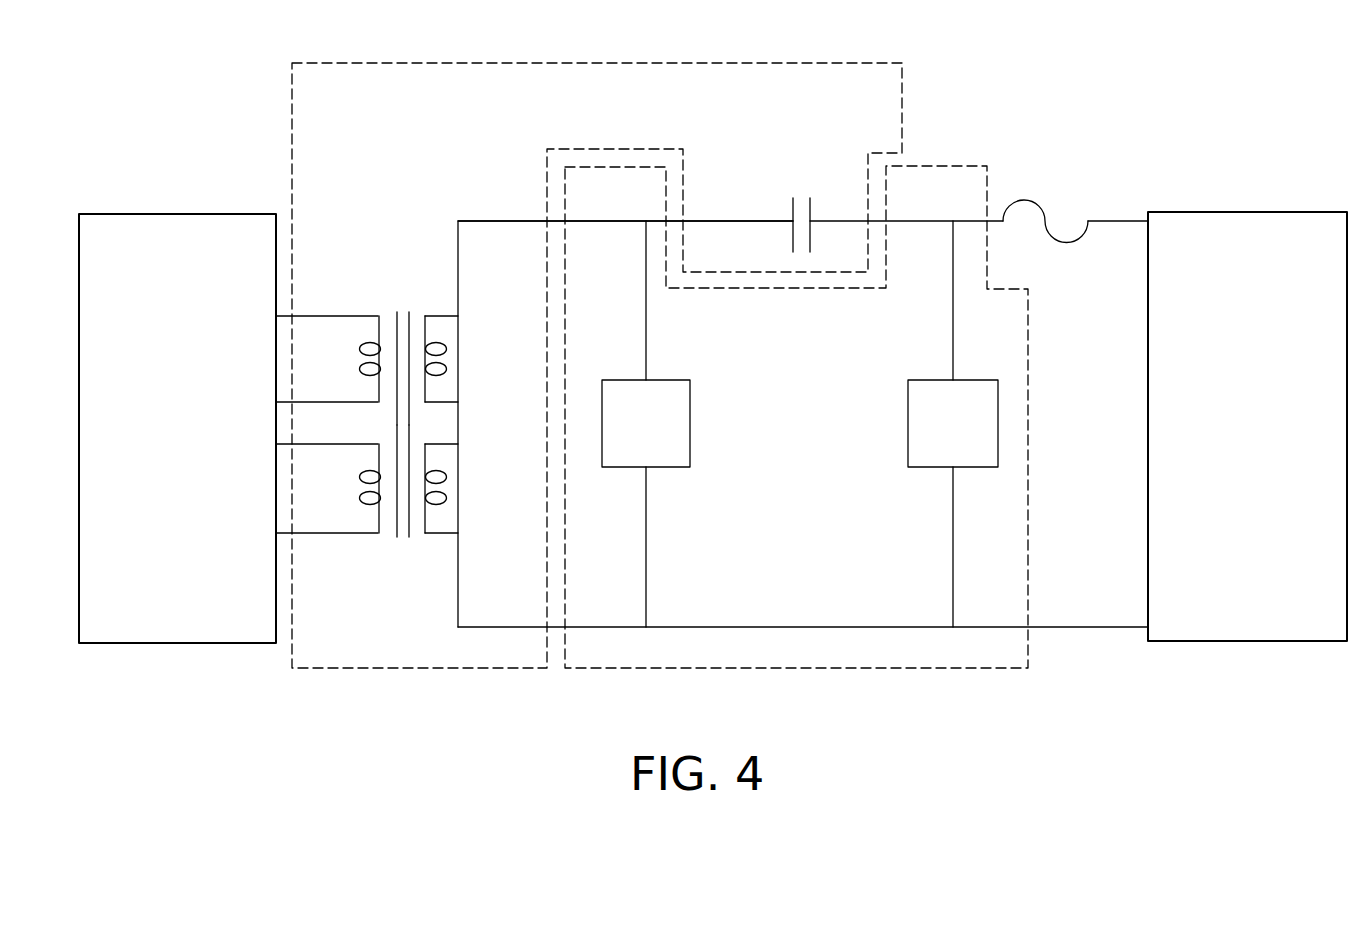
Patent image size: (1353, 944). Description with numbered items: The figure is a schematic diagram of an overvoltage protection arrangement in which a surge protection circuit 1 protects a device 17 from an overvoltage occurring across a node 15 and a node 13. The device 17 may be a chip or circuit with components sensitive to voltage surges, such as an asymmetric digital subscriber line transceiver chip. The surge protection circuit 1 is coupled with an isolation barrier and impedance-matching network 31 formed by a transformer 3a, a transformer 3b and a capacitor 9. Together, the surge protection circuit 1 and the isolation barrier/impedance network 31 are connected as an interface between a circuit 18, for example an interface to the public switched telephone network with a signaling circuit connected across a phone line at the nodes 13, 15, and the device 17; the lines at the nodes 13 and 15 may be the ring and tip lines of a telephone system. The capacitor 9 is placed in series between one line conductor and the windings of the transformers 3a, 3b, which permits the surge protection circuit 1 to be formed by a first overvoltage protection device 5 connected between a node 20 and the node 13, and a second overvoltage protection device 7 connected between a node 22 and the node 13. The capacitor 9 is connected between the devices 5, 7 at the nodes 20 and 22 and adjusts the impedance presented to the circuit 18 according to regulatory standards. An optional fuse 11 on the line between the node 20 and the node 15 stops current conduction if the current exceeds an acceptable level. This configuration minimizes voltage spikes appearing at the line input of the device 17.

The surge protection circuit 1 is at (928, 148).
The transformer 3a is at (367, 314).
The transformer 3b is at (367, 532).
The first overvoltage protection device 5 is at (985, 424).
The second overvoltage protection device 7 is at (674, 424).
The capacitor 9 is at (826, 181).
The fuse 11 is at (1070, 179).
The node 13 is at (803, 678).
The node 15 is at (1142, 172).
The device 17 is at (177, 383).
The circuit 18 is at (1250, 376).
The node 20 is at (796, 395).
The node 22 is at (625, 162).
The isolation barrier/impedance network 31 is at (888, 60).